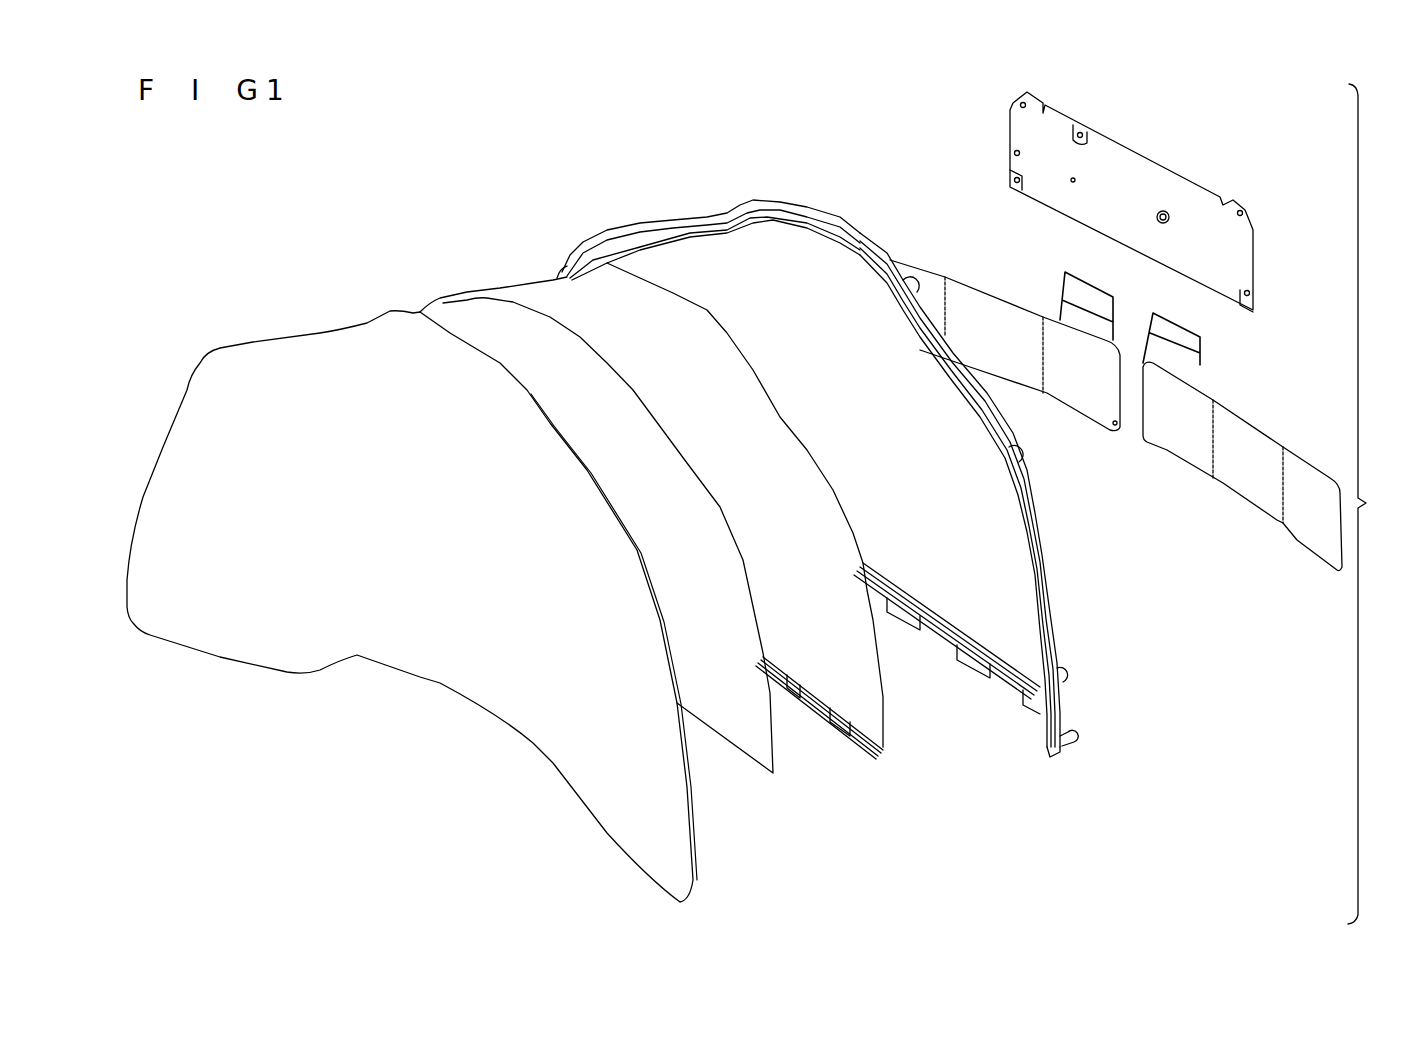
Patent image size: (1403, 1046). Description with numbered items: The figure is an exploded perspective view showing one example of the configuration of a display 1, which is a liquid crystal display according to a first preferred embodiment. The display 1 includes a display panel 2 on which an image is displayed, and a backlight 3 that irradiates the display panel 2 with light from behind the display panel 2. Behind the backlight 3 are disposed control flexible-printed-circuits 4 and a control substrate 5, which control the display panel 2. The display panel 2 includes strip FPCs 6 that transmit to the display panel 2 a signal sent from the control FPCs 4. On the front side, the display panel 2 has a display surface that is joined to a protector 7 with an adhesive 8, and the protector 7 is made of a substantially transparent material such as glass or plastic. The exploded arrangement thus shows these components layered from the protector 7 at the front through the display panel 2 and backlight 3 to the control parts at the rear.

The display 1 is at (1368, 504).
The display panel 2 is at (545, 295).
The backlight 3 is at (730, 250).
The control flexible-printed-circuits 4 is at (1105, 415).
The control substrate 5 is at (1127, 160).
The strip FPCs 6 is at (790, 693).
The protector 7 is at (608, 812).
The adhesive 8 is at (735, 745).